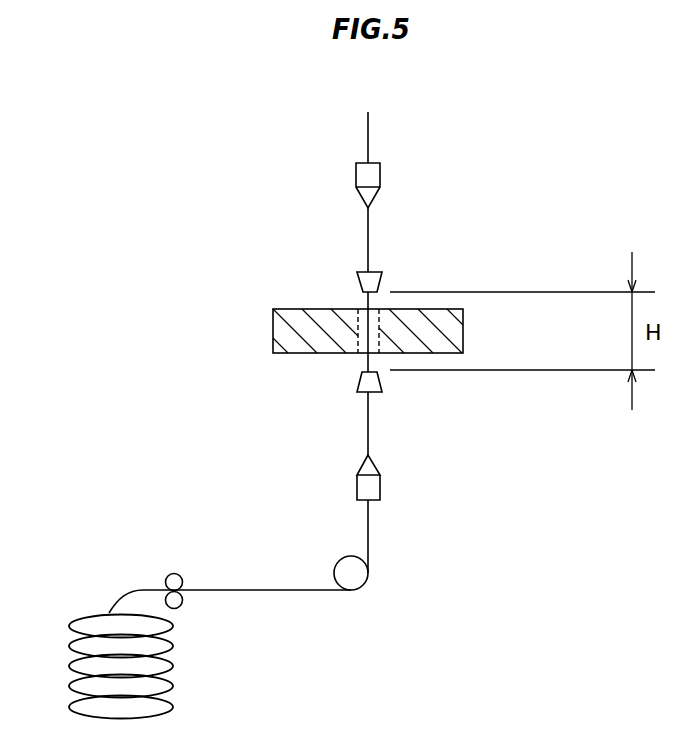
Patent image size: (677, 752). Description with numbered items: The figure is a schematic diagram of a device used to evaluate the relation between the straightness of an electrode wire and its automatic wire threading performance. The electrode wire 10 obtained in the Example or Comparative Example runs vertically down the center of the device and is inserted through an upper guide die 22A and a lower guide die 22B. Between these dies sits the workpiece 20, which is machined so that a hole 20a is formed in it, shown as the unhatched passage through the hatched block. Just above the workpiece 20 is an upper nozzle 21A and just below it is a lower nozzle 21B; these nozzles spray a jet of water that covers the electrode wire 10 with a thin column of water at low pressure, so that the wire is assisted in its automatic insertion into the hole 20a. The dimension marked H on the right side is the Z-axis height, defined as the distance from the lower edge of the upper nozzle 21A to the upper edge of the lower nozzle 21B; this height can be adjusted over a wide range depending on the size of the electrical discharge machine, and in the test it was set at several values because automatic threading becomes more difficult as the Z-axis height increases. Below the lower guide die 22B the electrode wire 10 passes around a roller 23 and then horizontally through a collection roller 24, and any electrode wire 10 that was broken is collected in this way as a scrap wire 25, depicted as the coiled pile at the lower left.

The electrode wire 10 is at (366, 138).
The upper guide die 22A is at (380, 173).
The upper nozzle 21A is at (382, 276).
The workpiece 20 is at (272, 322).
The hole 20a is at (355, 340).
The lower nozzle 21B is at (380, 382).
The lower guide die 22B is at (380, 488).
The roller 23 is at (368, 582).
The collection roller 24 is at (170, 573).
The scrap wire 25 is at (170, 670).